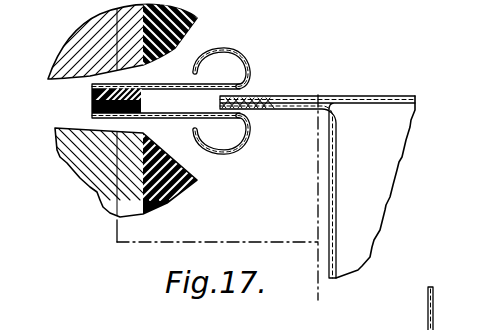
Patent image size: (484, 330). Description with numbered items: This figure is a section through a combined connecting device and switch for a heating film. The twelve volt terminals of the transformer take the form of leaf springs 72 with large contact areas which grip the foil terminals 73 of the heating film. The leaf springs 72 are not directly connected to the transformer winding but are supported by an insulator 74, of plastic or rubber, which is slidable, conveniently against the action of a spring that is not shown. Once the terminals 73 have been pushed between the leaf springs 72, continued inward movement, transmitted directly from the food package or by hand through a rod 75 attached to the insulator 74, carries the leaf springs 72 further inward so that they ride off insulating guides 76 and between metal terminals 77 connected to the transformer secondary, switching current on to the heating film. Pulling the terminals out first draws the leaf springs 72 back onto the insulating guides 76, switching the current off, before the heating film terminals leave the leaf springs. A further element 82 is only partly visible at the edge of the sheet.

The leaf springs 72 is at (248, 65).
The foil terminals of the heating film 73 is at (311, 104).
The insulator 74 is at (91, 101).
The rod 75 is at (116, 229).
The insulating guides 76 is at (197, 19).
The metal terminals 77 is at (104, 28).
The strip (partial, adjacent figure) 82 is at (447, 308).